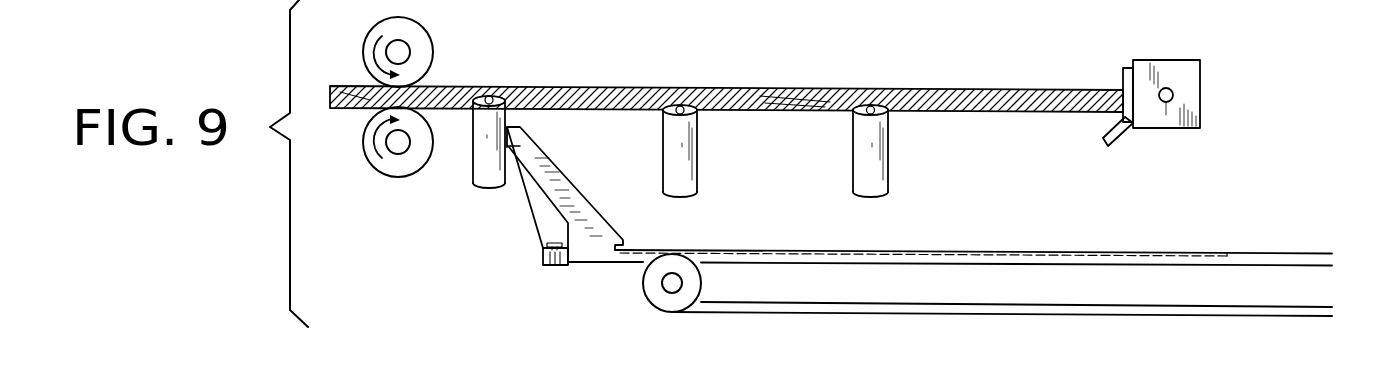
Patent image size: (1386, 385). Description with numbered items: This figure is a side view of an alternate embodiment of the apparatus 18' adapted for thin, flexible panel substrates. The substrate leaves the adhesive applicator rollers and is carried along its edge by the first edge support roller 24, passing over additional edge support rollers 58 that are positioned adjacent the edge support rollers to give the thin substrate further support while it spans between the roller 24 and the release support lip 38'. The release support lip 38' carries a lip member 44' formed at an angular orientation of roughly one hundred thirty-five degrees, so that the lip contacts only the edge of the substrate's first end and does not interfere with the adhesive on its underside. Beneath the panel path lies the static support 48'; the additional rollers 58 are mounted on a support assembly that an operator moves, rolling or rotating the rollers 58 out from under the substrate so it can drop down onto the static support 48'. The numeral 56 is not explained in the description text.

The laminated strip 18' is at (730, 64).
The guide roller 24 is at (470, 175).
The cutter block 38' is at (1209, 81).
The cutting blade 44' is at (1150, 160).
The support bar 48' is at (565, 226).
The seam 56 is at (610, 53).
The guide rollers 58 is at (698, 173).